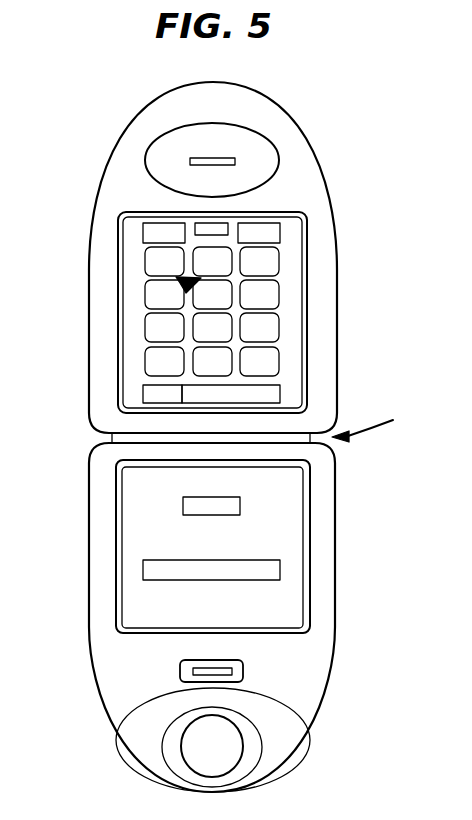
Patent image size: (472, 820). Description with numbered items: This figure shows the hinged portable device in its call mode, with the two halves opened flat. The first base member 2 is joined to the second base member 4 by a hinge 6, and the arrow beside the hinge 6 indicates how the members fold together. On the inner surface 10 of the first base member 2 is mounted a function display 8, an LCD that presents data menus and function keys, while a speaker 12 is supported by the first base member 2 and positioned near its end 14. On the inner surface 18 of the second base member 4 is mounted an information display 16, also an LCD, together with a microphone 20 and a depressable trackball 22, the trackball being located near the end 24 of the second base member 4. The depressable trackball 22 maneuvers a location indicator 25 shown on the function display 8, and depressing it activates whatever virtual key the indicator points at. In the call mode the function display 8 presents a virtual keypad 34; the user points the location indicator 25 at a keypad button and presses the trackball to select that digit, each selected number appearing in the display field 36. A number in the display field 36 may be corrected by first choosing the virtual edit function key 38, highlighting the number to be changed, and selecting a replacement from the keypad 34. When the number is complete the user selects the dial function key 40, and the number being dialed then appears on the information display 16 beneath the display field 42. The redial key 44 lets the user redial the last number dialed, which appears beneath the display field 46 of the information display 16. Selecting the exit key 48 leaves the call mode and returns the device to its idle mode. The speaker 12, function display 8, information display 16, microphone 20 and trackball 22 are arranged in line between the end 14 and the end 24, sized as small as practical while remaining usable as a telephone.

The first base member 2 is at (333, 200).
The second base member 4 is at (335, 640).
The hinge 6 is at (368, 420).
The function display 8 is at (308, 345).
The inner surface 10 is at (303, 163).
The speaker 12 is at (253, 128).
The end 14 is at (213, 82).
The information display 16 is at (322, 543).
The inner surface 18 is at (307, 692).
The microphone 20 is at (180, 670).
The depressable trackball 22 is at (247, 743).
The end 24 is at (127, 765).
The location indicator 25 is at (177, 277).
The virtual keypad 34 is at (233, 224).
The display field 36 is at (280, 390).
The virtual edit function key 38 is at (143, 392).
The dial function key 40 is at (208, 223).
The display field 42 is at (240, 507).
The redial key 44 is at (143, 233).
The display field 46 is at (143, 570).
The exit key 48 is at (280, 233).